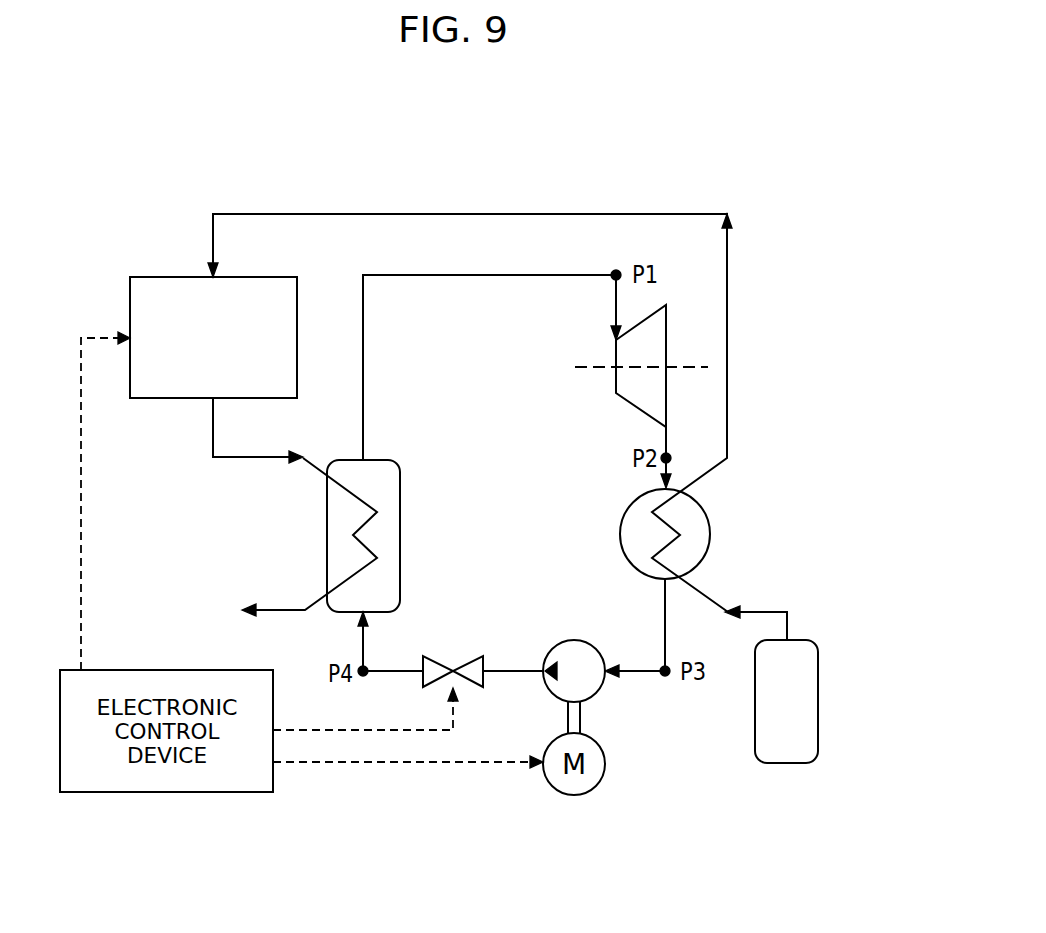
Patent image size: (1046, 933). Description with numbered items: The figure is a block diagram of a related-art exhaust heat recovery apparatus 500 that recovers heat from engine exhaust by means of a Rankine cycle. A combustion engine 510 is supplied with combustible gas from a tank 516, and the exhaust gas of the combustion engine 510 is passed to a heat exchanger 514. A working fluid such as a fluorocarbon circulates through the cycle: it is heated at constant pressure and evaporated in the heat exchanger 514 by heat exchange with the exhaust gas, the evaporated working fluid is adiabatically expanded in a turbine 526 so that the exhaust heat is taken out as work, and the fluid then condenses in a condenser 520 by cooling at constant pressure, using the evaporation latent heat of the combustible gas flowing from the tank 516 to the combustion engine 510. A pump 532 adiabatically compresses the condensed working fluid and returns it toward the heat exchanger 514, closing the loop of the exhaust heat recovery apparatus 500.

The exhaust heat recovery apparatus 500 is at (676, 195).
The combustion engine 510 is at (282, 355).
The heat exchanger 514 is at (400, 518).
The tank 516 is at (820, 708).
The condenser 520 is at (710, 530).
The turbine 526 is at (666, 334).
The pump 532 is at (572, 641).